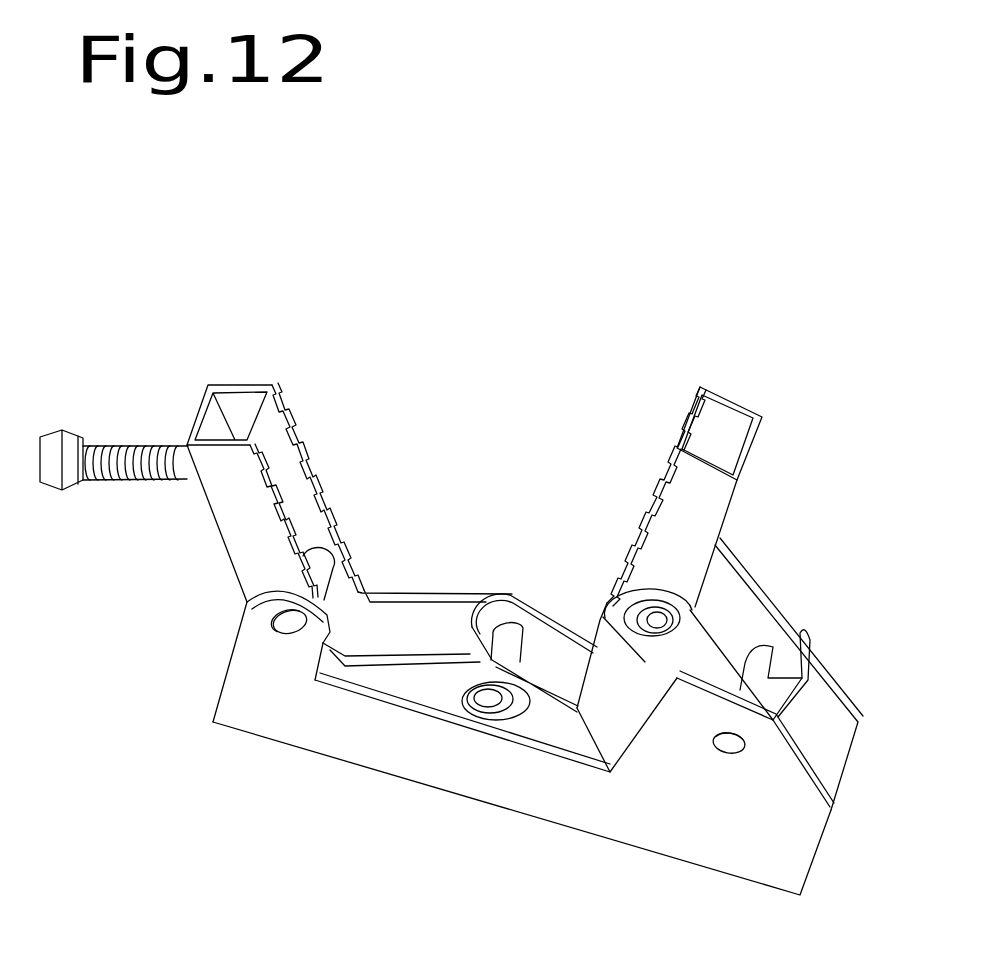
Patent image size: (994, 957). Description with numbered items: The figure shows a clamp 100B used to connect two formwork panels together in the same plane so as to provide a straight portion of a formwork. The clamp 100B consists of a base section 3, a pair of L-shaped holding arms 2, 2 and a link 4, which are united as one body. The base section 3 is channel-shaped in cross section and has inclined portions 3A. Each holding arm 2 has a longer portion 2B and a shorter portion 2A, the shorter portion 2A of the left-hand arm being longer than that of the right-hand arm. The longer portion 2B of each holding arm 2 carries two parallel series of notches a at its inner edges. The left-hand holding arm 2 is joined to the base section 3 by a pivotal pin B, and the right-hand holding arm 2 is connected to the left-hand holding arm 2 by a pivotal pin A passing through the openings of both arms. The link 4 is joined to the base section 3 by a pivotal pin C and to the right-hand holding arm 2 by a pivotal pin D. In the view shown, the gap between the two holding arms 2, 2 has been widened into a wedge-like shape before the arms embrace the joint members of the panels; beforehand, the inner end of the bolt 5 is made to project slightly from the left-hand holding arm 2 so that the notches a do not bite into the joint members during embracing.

The clamp 100B is at (453, 431).
The L-shaped holding arm 2 is at (232, 380).
The shorter portion 2A is at (410, 606).
The longer portion 2B is at (223, 527).
The notches a is at (294, 520).
The base section 3 is at (587, 843).
The inclined portion 3A is at (845, 693).
The link 4 is at (773, 587).
The bolt 5 is at (112, 442).
The pivotal pin A is at (485, 703).
The pivotal pin B is at (273, 622).
The pivotal pin C is at (728, 755).
The pivotal pin D is at (655, 614).